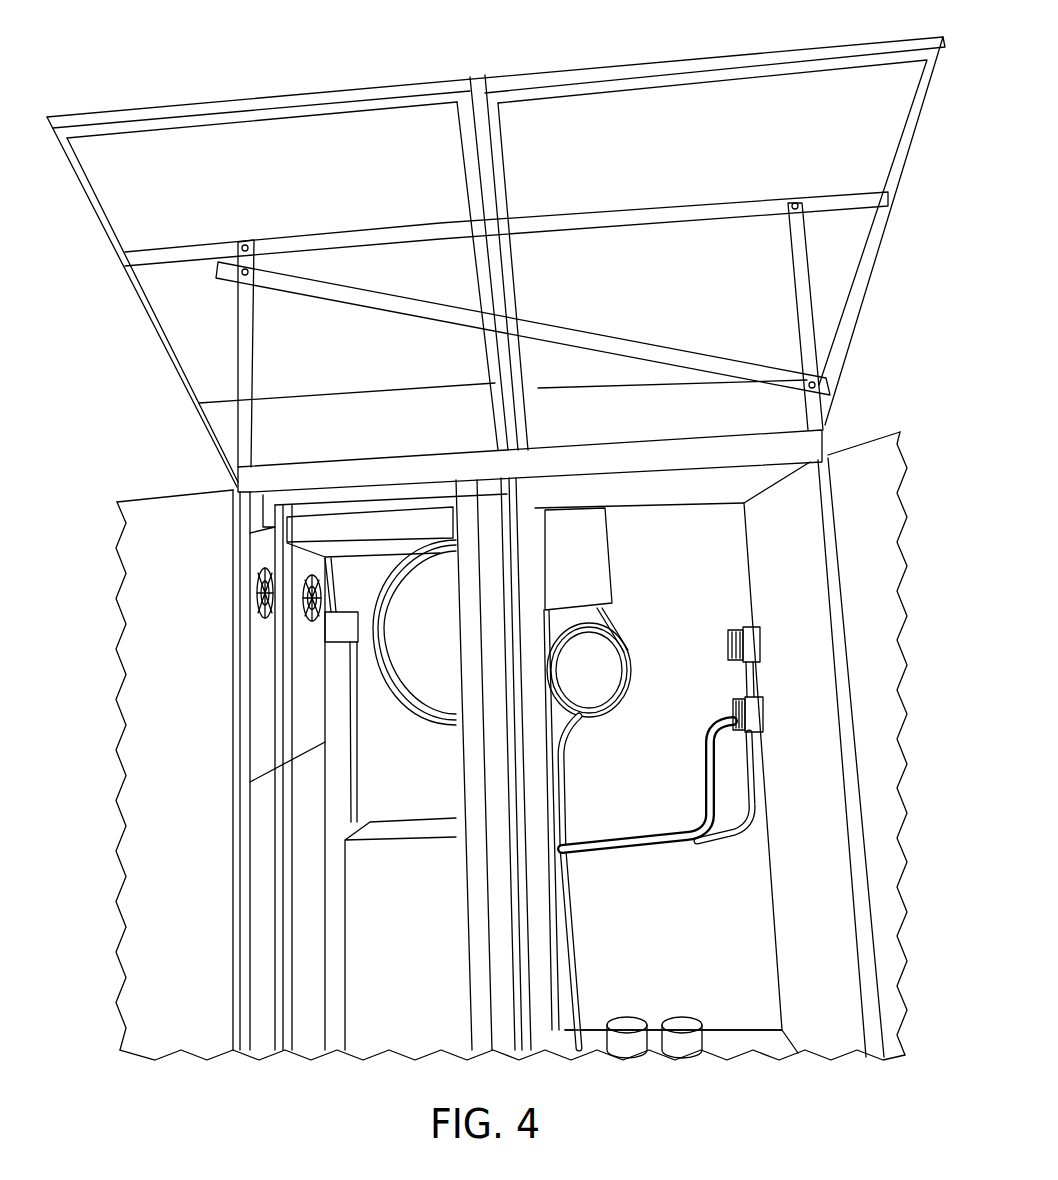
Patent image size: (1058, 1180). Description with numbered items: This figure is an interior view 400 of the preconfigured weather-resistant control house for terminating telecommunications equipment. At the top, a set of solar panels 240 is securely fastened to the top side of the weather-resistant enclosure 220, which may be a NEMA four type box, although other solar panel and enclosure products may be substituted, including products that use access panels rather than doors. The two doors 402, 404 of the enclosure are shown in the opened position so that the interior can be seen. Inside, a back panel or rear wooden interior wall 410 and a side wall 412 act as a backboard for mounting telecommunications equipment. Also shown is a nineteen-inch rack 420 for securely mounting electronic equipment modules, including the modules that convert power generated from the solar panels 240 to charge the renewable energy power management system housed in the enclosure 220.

The solar panels 240 is at (607, 66).
The weather-resistant enclosure 220 is at (139, 702).
The door 402 is at (119, 608).
The door 404 is at (880, 680).
The rear wooden interior wall 410 is at (731, 614).
The side wall 412 is at (837, 932).
The 19-inch rack 420 is at (411, 1035).
The interior view 400 is at (752, 1115).